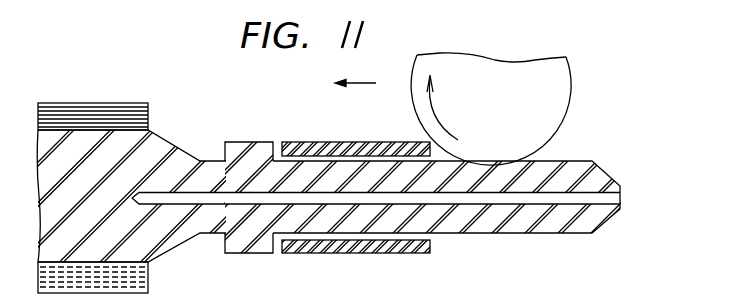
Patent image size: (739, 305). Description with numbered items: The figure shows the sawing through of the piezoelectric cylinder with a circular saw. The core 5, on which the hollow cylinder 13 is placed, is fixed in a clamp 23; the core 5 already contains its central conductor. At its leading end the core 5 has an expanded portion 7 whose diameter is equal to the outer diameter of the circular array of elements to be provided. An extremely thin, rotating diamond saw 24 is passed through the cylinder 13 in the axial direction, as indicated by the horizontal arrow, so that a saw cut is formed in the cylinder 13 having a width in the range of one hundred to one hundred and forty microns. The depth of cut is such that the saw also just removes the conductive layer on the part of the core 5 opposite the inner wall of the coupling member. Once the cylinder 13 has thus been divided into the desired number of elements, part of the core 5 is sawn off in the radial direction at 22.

The core 5 is at (597, 177).
The expanded portion 7 is at (255, 157).
The hollow cylinder 13 is at (363, 150).
The radial saw-off location 22 is at (162, 150).
The clamp 23 is at (113, 103).
The rotating diamond saw 24 is at (558, 109).